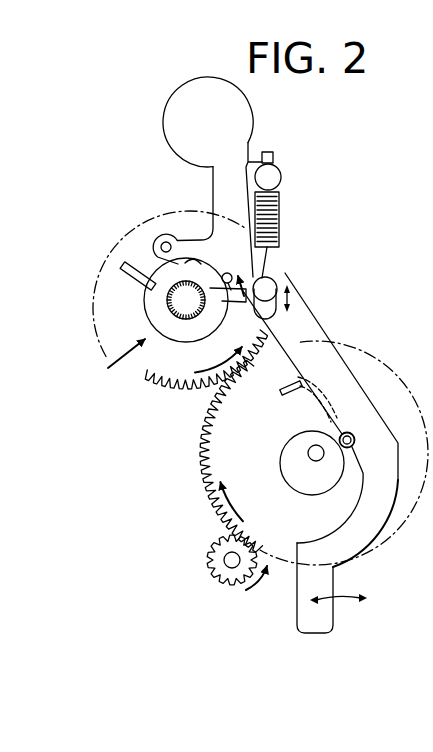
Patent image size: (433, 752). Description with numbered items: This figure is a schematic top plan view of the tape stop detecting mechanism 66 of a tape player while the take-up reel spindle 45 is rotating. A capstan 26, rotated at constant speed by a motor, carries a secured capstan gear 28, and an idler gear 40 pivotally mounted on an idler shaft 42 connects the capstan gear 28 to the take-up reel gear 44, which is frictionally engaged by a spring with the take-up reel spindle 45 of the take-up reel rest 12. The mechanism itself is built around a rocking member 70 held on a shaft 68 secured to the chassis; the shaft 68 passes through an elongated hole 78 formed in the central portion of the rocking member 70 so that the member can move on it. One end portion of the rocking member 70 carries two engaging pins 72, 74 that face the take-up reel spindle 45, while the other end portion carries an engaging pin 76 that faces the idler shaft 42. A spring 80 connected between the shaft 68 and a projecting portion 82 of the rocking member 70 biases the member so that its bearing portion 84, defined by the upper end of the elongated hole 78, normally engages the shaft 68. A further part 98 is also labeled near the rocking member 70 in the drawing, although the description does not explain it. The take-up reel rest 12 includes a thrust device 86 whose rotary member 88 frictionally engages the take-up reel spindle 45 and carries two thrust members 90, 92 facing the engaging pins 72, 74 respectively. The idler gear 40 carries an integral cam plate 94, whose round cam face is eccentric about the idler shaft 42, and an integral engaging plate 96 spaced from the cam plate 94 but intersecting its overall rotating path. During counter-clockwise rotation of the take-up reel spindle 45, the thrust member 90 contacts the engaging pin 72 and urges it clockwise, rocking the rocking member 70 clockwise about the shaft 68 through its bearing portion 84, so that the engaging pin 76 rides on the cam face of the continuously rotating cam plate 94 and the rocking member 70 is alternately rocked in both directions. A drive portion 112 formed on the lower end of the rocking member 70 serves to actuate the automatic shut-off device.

The take-up reel rest 12 is at (133, 228).
The capstan 26 is at (224, 560).
The capstan gear 28 is at (214, 573).
The idler gear 40 is at (206, 448).
The idler shaft 42 is at (308, 453).
The take-up reel gear 44 is at (180, 391).
The take-up reel spindle 45 is at (181, 309).
The tape stop detecting mechanism 66 is at (337, 287).
The shaft 68 is at (284, 279).
The rocking member 70 is at (318, 335).
The engaging pin 72 is at (227, 273).
The engaging pin 74 is at (167, 242).
The engaging pin 76 is at (354, 437).
The elongated hole 78 is at (270, 313).
The spring 80 is at (280, 214).
The projecting portion 82 is at (243, 137).
The bearing portion 84 is at (275, 278).
The thrust device 86 is at (153, 322).
The rotary member 88 is at (160, 319).
The thrust member 90 is at (229, 303).
The thrust member 92 is at (136, 283).
The cam plate 94 is at (300, 484).
The engaging plate 96 is at (281, 392).
The lug 98 is at (194, 262).
The drive portion 112 is at (325, 620).